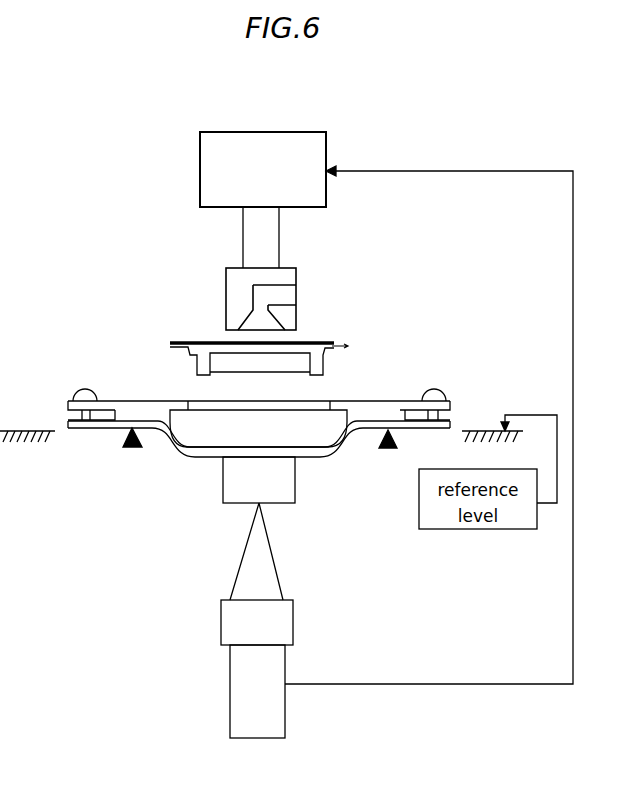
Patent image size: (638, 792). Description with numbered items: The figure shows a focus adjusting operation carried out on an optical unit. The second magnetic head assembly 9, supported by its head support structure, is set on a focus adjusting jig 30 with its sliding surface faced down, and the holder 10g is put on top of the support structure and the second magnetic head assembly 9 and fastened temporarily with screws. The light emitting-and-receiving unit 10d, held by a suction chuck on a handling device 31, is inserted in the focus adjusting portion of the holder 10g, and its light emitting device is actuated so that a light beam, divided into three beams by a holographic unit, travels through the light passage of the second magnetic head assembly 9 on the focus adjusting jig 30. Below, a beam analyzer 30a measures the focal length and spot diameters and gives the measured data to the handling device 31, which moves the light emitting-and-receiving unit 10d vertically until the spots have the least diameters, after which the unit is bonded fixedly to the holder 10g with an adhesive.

The handling device 31 is at (200, 176).
The light emitting-and-receiving unit 10d is at (333, 333).
The holder 10g is at (373, 405).
The focus adjusting jig 30 is at (43, 441).
The second magnetic head assembly 9 is at (295, 485).
The beam analyzer 30a is at (285, 726).